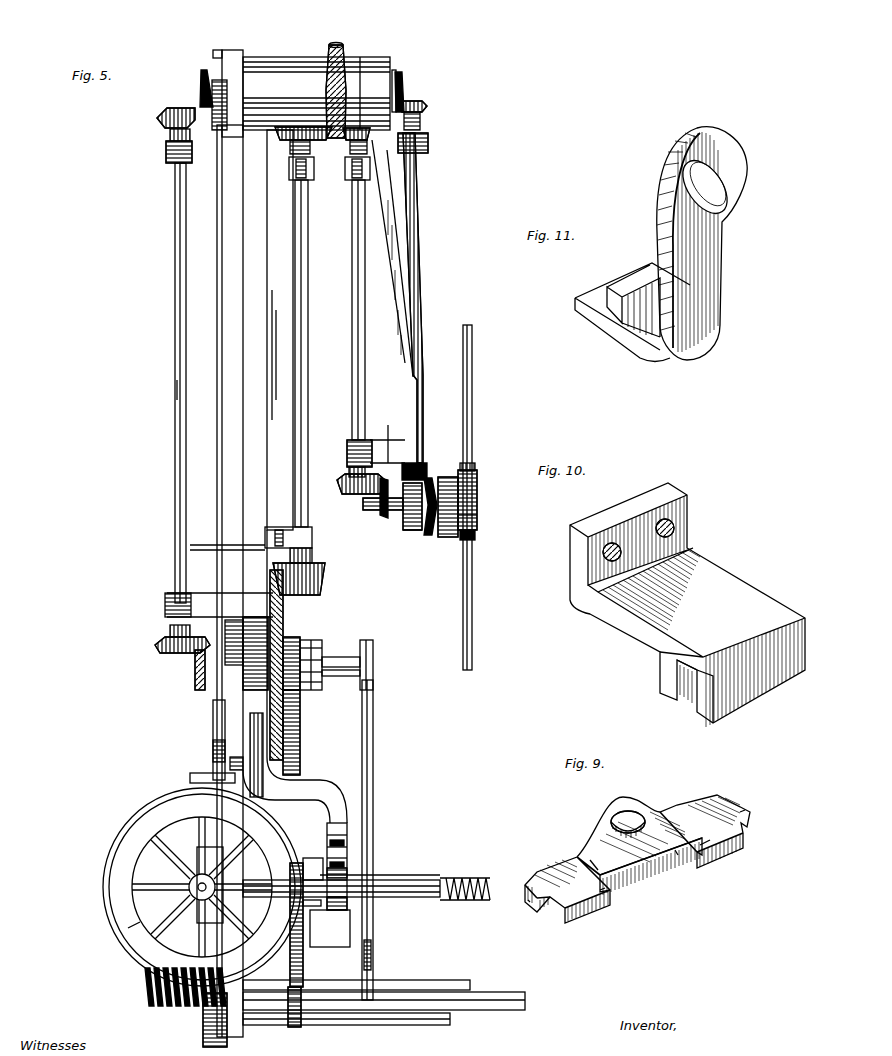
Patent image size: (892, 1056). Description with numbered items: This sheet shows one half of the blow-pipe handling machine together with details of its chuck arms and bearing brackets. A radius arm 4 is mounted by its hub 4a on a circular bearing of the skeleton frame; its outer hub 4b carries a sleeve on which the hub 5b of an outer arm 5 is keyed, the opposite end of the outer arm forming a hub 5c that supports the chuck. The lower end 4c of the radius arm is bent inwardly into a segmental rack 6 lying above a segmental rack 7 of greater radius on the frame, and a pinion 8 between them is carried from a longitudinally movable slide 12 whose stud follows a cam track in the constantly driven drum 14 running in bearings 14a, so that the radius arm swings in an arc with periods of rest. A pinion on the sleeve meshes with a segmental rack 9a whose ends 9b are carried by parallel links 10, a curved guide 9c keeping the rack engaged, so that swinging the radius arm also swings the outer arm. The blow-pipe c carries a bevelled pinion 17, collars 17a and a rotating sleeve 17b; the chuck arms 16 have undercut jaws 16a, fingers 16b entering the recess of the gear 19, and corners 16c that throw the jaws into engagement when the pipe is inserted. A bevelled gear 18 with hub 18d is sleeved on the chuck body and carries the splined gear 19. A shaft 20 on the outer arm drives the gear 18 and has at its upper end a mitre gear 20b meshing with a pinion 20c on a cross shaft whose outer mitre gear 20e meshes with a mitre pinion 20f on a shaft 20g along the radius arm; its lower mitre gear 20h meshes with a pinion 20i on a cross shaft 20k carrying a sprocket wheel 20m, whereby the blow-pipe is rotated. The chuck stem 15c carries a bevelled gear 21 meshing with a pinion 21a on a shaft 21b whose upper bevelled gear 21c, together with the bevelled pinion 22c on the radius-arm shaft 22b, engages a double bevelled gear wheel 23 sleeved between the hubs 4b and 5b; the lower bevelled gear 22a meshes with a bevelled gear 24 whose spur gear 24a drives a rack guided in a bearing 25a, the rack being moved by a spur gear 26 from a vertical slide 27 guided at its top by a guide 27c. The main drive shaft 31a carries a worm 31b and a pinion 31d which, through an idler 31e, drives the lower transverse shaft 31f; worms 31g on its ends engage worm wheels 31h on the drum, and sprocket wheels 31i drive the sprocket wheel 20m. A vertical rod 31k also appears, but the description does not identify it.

In FIG. 5, the radius arm 4 is at (253, 248).
In FIG. 5, the hub of radius arm 4a is at (276, 640).
In FIG. 5, the outer hub of radius arm 4b is at (278, 70).
In FIG. 5, the lower end of radius arm 4c is at (330, 800).
In FIG. 5, the outer arm 5 is at (385, 203).
In FIG. 5, the hub of outer arm 5b is at (368, 70).
In FIG. 5, the hub of outer arm 5c is at (408, 530).
In FIG. 5, the segmental rack 6 is at (347, 835).
In FIG. 5, the segmental rack 7 is at (334, 947).
In FIG. 5, the pinion 8 is at (370, 878).
In FIG. 5, the segmental rack 9a is at (170, 135).
In FIG. 5, the ends of segmental rack 9b is at (234, 58).
In FIG. 5, the curved guide 9c is at (168, 152).
In FIG. 5, the parallel links 10 is at (217, 213).
In FIG. 5, the longitudinally movable slide 12 is at (310, 860).
In FIG. 5, the drum 14 is at (125, 822).
In FIG. 5, the bearings 14a is at (190, 887).
In FIG. 5, the stem of chuck body 15c is at (388, 445).
In FIG. 9, the chuck arms 16 is at (670, 812).
In FIG. 9, the undercut jaws 16a is at (710, 845).
In FIG. 9, the fingers 16b is at (740, 810).
In FIG. 9, the corner 16c is at (600, 862).
In FIG. 5, the bevelled pinion 17 is at (478, 482).
In FIG. 5, the collars 17a is at (476, 536).
In FIG. 5, the rotating sleeve 17b is at (477, 515).
In FIG. 5, the bevelled gear 18 is at (412, 532).
In FIG. 5, the hub of bevelled gear 18d is at (430, 480).
In FIG. 5, the second gear 19 is at (446, 538).
In FIG. 5, the shaft 20 is at (419, 236).
In FIG. 5, the mitre gear 20b is at (428, 106).
In FIG. 5, the mitre pinion 20c is at (406, 84).
In FIG. 5, the mitre gear 20e is at (202, 74).
In FIG. 5, the mitre pinion 20f is at (157, 116).
In FIG. 5, the shaft 20g is at (175, 383).
In FIG. 5, the mitre gear 20h is at (157, 648).
In FIG. 5, the mitre pinion 20i is at (195, 672).
In FIG. 5, the cross shaft 20k is at (338, 662).
In FIG. 5, the sprocket wheel 20m is at (373, 659).
In FIG. 5, the bevelled gear 21 is at (368, 510).
In FIG. 5, the pinion 21a is at (350, 494).
In FIG. 5, the shaft 21b is at (352, 372).
In FIG. 5, the bevelled gear 21c is at (370, 135).
In FIG. 5, the bevelled gear 22a is at (322, 578).
In FIG. 5, the shaft 22b is at (306, 265).
In FIG. 5, the bevelled pinion 22c is at (318, 188).
In FIG. 5, the double bevelled gear wheel 23 is at (337, 44).
In FIG. 5, the bevelled gear 24 is at (268, 618).
In FIG. 5, the spur gear 24a is at (300, 640).
In FIG. 5, the bearing 25a is at (373, 681).
In FIG. 11, the bearing 25a is at (705, 280).
In FIG. 10, the bearing 25a is at (682, 530).
In FIG. 5, the spur gear 26 is at (300, 755).
In FIG. 5, the vertical slide 27 is at (213, 742).
In FIG. 5, the guide 27c is at (190, 777).
In FIG. 5, the main drive shaft 31a is at (412, 880).
In FIG. 5, the worm 31b is at (470, 876).
In FIG. 5, the pinion 31d is at (347, 870).
In FIG. 5, the idler 31e is at (350, 930).
In FIG. 5, the lower transverse shaft 31f is at (413, 985).
In FIG. 5, the worm 31g is at (180, 1003).
In FIG. 5, the worm wheel 31h is at (135, 925).
In FIG. 5, the sprocket wheel 31i is at (373, 962).
In FIG. 5, the vertical rod 31k is at (373, 755).
In FIG. 5, the blow-pipe c is at (472, 380).